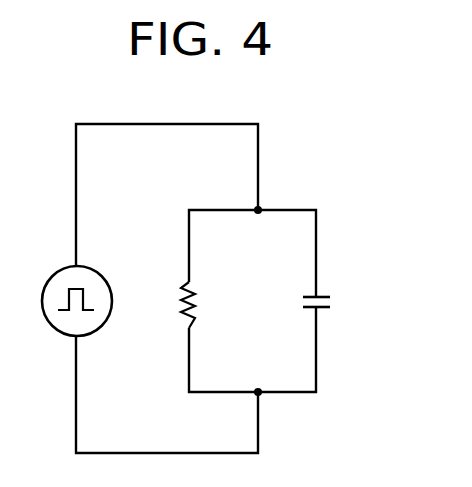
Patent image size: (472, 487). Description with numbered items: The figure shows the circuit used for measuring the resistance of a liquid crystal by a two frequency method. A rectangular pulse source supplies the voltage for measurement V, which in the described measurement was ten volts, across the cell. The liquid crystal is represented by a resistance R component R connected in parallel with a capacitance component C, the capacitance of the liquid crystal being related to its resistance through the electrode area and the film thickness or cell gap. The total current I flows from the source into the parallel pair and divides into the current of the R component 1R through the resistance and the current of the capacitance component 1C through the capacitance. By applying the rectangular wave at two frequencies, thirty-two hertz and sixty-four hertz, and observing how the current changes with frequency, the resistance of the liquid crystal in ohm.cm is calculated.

The voltage for measurement V is at (89, 288).
The R component R is at (219, 305).
The capacitance component C is at (346, 302).
The current I is at (268, 150).
The current of R component 1R is at (205, 228).
The current of capacitance component 1C is at (338, 228).